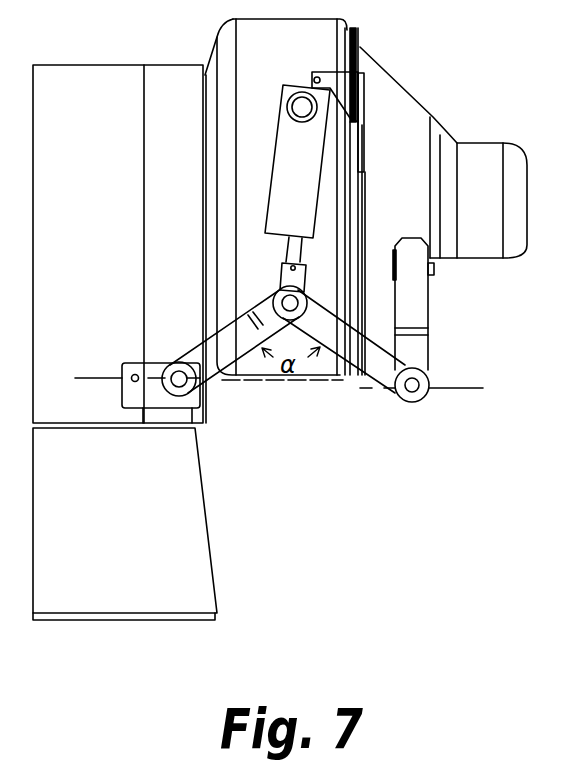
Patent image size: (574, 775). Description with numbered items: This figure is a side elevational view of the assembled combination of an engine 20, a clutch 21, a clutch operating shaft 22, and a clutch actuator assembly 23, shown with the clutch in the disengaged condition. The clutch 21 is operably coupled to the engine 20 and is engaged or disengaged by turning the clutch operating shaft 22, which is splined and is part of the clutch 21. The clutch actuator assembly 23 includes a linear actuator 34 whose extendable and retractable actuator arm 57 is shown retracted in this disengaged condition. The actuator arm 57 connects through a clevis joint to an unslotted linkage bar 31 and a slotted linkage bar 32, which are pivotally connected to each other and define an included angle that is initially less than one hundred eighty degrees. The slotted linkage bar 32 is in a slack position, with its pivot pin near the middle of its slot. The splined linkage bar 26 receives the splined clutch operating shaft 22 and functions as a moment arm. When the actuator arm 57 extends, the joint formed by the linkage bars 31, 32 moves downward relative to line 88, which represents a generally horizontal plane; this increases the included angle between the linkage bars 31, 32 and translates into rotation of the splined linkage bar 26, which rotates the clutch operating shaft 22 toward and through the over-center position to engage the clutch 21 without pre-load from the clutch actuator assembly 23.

The engine 20 is at (88, 100).
The clutch 21 is at (397, 108).
The clutch operating shaft 22 is at (418, 228).
The clutch actuator assembly 23 is at (262, 492).
The splined linkage bar 26 is at (422, 318).
The linkage bar 31 is at (202, 360).
The slotted linkage bar 32 is at (355, 345).
The linear actuator 34 is at (298, 157).
The actuator arm 57 is at (295, 244).
The line 88 is at (477, 390).